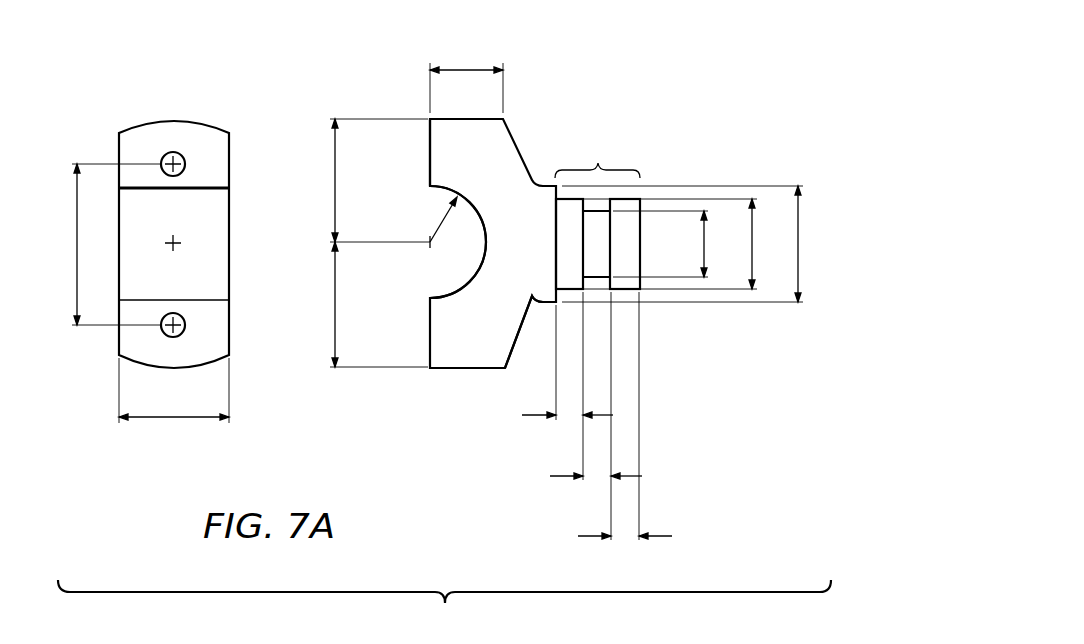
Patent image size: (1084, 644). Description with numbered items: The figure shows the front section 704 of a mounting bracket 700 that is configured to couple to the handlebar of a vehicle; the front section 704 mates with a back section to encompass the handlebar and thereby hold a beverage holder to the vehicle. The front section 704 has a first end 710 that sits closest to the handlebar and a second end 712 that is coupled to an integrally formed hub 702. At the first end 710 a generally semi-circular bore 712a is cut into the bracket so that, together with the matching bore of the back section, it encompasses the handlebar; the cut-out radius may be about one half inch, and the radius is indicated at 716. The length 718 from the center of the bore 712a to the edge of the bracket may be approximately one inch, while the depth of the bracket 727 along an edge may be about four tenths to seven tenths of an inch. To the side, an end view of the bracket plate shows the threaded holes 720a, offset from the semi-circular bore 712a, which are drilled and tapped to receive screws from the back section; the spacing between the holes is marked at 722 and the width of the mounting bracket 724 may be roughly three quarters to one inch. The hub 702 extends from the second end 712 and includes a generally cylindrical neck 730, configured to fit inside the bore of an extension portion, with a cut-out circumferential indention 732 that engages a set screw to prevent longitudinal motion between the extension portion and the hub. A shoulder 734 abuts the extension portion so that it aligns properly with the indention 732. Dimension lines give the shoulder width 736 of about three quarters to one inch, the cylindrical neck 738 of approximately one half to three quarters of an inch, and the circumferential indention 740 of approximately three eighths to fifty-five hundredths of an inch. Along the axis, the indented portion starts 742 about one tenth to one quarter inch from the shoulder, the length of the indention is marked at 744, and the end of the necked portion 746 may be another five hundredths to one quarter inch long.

The mounting bracket 700 is at (241, 51).
The hub 702 is at (645, 193).
The front section 704 is at (514, 106).
The first end 710 is at (430, 158).
The second end 712 is at (534, 307).
The semi-circular bore 712a is at (457, 292).
The recess radius 716 is at (440, 222).
The length 718 is at (335, 165).
The threaded holes 720a is at (180, 152).
The hole spacing dimension 722 is at (77, 243).
The width of the mounting bracket 724 is at (172, 418).
The depth of the bracket 727 is at (467, 68).
The cylindrical neck 730 is at (598, 162).
The circumferential indention 732 is at (600, 252).
The shoulder 734 is at (560, 273).
The shoulder width 736 is at (799, 245).
The cylindrical neck dimension 738 is at (753, 245).
The circumferential indention dimension 740 is at (707, 245).
The indented portion start 742 is at (566, 417).
The neck length dimension 744 is at (594, 477).
The end of the necked portion 746 is at (623, 540).